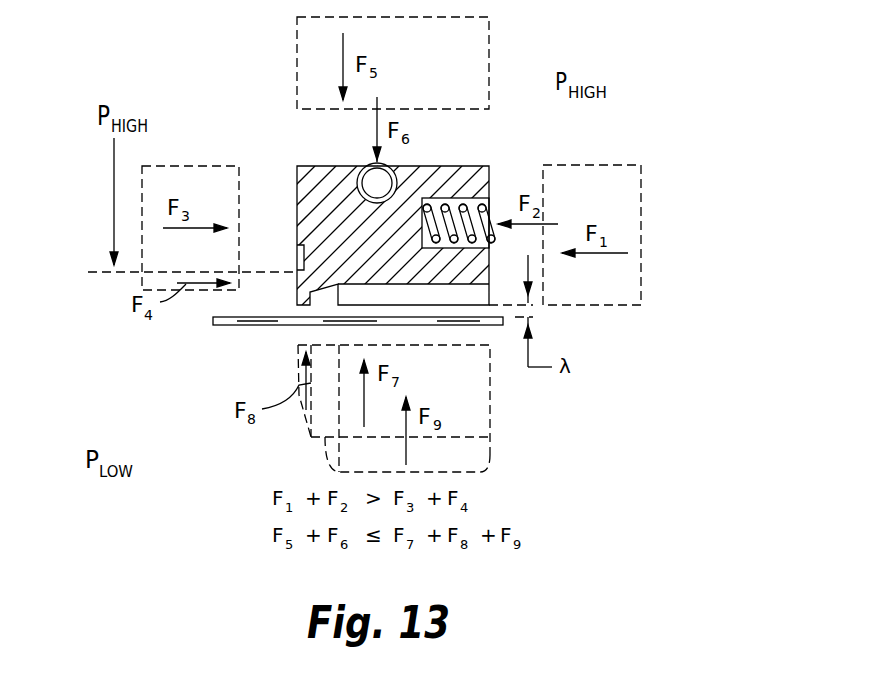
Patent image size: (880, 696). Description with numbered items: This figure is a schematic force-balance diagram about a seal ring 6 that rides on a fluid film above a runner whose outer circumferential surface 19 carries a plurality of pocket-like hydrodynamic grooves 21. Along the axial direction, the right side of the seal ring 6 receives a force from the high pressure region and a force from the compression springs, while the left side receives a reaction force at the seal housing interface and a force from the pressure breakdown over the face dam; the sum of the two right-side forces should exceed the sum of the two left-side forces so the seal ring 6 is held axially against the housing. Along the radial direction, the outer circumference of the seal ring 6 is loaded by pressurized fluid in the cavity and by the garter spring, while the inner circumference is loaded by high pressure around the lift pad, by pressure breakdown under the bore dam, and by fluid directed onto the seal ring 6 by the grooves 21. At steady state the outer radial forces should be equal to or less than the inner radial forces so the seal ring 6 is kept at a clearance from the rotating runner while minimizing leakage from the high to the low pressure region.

The seal ring 6 is at (318, 192).
The outer circumferential surface 19 is at (228, 317).
The grooves 21 is at (323, 322).